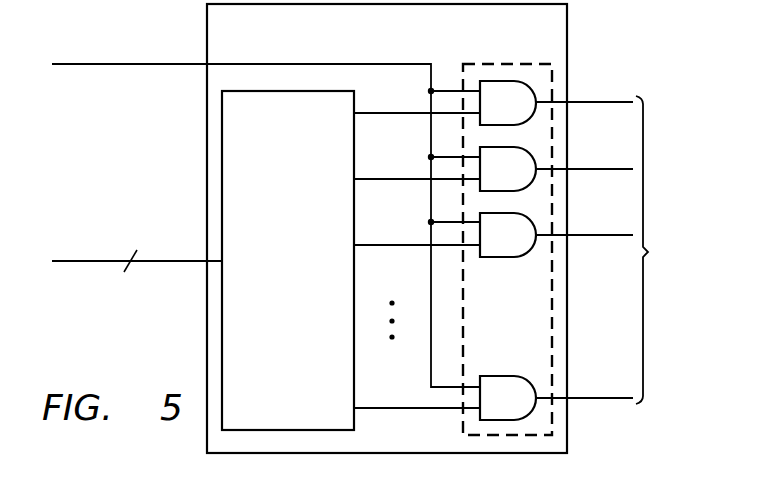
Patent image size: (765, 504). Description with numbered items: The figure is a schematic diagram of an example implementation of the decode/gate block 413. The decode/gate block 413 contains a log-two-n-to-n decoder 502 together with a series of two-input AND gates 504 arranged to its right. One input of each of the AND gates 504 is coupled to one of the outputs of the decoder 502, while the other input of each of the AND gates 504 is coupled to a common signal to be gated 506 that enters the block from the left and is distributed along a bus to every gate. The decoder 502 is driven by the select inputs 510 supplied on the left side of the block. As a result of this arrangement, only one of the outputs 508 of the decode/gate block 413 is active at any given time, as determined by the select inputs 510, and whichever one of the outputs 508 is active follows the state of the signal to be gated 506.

The decode/gate block 413 is at (568, 44).
The signal to be gated 506 is at (135, 64).
The log2 n:n decoder 502 is at (308, 306).
The select inputs 510 is at (73, 262).
The two-input AND gates 504 is at (505, 64).
The outputs 508 is at (615, 250).